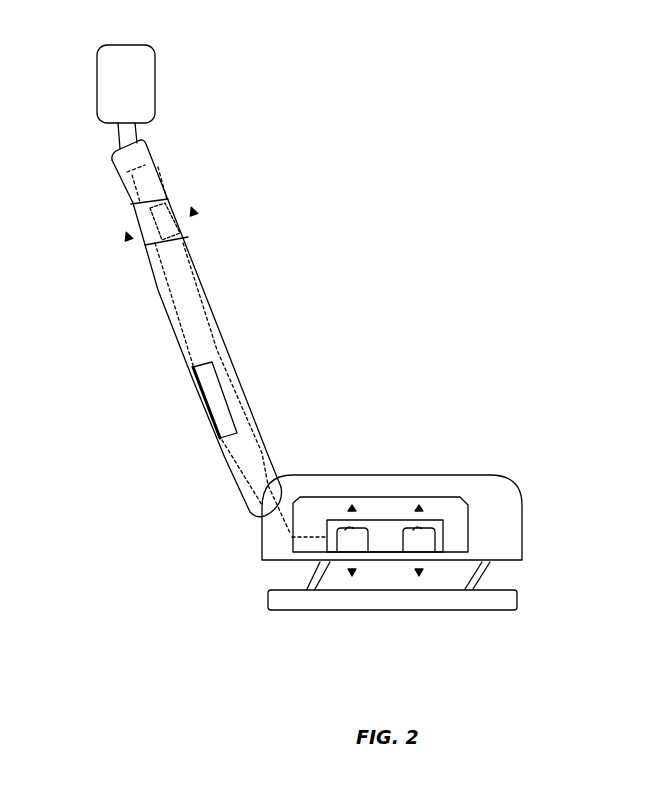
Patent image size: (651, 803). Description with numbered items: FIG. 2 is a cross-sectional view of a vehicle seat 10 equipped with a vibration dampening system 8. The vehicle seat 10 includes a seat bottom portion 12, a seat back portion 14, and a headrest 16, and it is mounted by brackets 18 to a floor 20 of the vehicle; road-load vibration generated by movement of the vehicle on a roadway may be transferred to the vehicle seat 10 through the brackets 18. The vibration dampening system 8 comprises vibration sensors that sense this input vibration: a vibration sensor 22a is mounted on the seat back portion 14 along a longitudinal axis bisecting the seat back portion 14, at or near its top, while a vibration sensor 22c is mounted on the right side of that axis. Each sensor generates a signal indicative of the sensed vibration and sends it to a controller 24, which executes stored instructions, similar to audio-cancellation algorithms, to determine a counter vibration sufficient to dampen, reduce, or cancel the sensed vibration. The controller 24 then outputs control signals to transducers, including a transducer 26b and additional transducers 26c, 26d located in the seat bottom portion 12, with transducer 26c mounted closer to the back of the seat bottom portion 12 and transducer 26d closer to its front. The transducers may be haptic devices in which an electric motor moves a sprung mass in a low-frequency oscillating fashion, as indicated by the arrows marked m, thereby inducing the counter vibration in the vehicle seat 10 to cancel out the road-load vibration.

The vibration dampening system 8 is at (385, 107).
The vehicle seat 10 is at (137, 302).
The seat bottom portion 12 is at (510, 486).
The seat back portion 14 is at (110, 153).
The headrest 16 is at (155, 85).
The brackets 18 is at (305, 579).
The floor 20 is at (517, 600).
The vibration sensor 22a is at (157, 162).
The vibration sensor 22c is at (266, 455).
The controller 24 is at (205, 407).
The transducer 26b is at (127, 203).
The transducer 26c is at (368, 528).
The transducer 26d is at (440, 528).